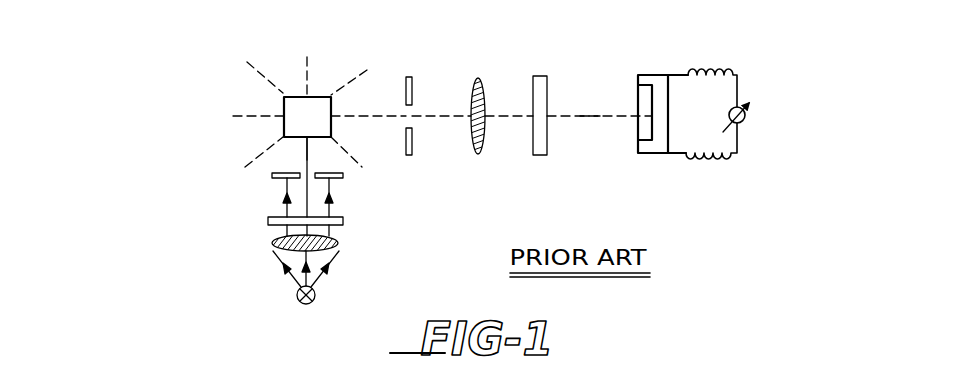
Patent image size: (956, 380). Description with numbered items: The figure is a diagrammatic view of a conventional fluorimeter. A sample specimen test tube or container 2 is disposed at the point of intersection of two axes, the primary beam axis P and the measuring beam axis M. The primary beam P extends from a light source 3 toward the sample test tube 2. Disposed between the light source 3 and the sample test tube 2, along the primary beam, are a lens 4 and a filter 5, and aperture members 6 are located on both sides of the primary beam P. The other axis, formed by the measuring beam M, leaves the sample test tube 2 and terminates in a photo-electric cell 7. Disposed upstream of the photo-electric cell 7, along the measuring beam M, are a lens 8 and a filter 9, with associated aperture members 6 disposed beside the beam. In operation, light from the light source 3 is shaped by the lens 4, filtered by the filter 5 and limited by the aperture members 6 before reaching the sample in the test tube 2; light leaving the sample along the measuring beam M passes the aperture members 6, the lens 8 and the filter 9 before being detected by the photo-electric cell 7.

The sample test tube 2 is at (293, 115).
The light source 3 is at (315, 294).
The lens 4 is at (335, 239).
The filter 5 is at (343, 221).
The aperture members 6 is at (406, 145).
The photo-electric cell 7 is at (723, 140).
The lens 8 is at (479, 80).
The filter 9 is at (539, 75).
The primary beam axis P is at (305, 149).
The measuring beam axis M is at (589, 112).